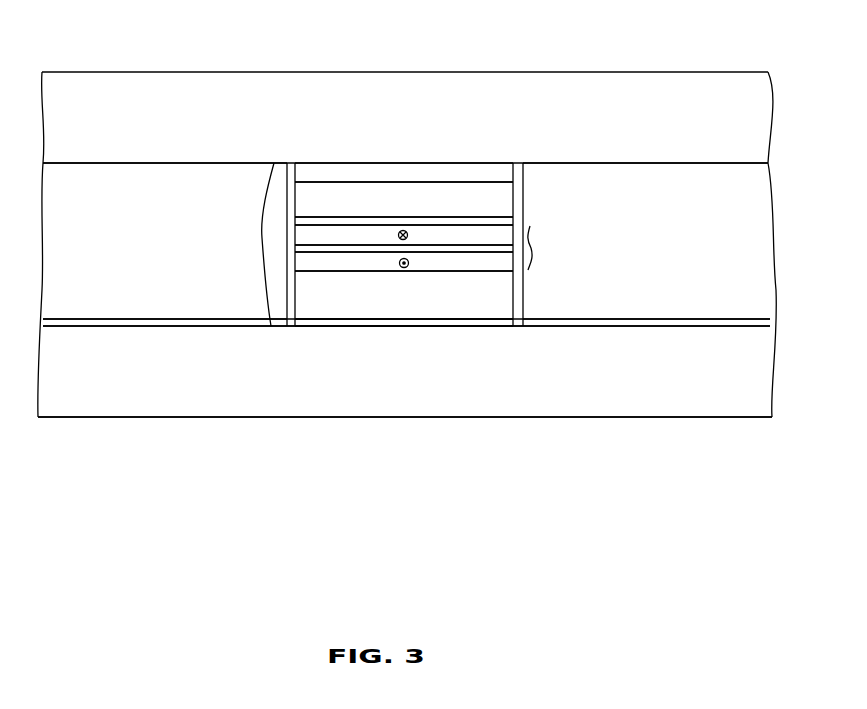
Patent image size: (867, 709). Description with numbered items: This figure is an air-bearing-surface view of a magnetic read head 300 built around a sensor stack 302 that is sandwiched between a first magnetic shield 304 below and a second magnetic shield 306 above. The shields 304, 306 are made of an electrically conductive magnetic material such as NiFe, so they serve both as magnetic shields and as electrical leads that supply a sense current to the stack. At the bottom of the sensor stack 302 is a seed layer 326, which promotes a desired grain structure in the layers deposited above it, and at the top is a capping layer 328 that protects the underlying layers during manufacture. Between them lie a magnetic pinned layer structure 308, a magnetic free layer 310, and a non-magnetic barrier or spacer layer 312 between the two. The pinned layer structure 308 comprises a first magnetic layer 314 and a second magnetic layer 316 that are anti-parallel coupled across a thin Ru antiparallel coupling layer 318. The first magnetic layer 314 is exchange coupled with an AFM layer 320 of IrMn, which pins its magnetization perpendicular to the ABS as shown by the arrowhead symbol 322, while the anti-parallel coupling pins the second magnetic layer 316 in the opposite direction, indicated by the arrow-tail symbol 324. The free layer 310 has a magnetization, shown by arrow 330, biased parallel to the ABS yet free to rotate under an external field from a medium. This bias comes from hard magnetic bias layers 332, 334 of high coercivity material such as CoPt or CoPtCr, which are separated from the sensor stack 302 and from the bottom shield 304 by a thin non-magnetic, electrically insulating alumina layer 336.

The magnetic read head 300 is at (455, 66).
The sensor stack 302 is at (268, 188).
The first magnetic shield 304 is at (437, 369).
The second magnetic shield 306 is at (350, 119).
The magnetic pinned layer structure 308 is at (532, 232).
The magnetic free layer 310 is at (513, 196).
The non-magnetic barrier or spacer layer 312 is at (513, 222).
The first magnetic layer 314 is at (308, 262).
The second magnetic layer 316 is at (308, 237).
The non-magnetic antiparallel coupling layer 318 is at (308, 250).
The AFM layer 320 is at (307, 290).
The arrowhead symbol 322 is at (410, 268).
The arrow-tail symbol 324 is at (398, 240).
The seed layer 326 is at (425, 322).
The capping layer 328 is at (483, 173).
The arrow 330 is at (387, 200).
The hard magnetic bias layer 332 is at (700, 235).
The hard magnetic bias layer 334 is at (146, 235).
The non-magnetic, electrically insulating layer 336 is at (220, 325).